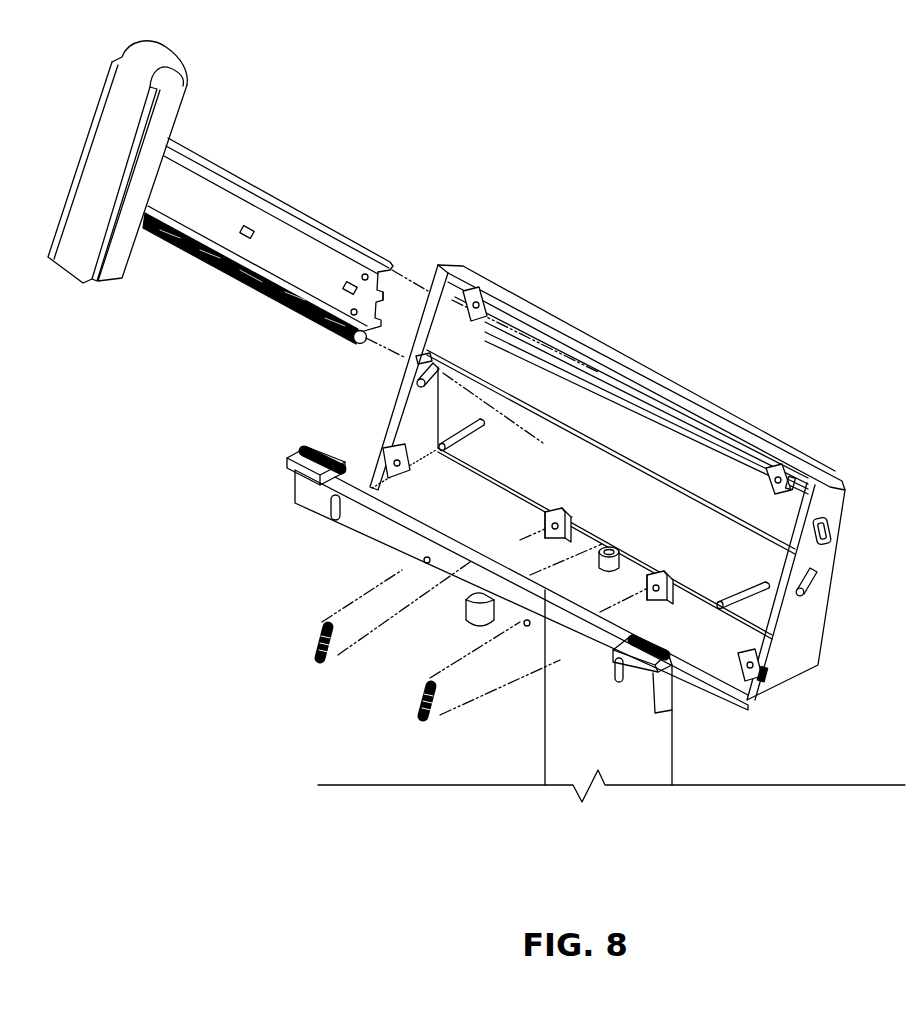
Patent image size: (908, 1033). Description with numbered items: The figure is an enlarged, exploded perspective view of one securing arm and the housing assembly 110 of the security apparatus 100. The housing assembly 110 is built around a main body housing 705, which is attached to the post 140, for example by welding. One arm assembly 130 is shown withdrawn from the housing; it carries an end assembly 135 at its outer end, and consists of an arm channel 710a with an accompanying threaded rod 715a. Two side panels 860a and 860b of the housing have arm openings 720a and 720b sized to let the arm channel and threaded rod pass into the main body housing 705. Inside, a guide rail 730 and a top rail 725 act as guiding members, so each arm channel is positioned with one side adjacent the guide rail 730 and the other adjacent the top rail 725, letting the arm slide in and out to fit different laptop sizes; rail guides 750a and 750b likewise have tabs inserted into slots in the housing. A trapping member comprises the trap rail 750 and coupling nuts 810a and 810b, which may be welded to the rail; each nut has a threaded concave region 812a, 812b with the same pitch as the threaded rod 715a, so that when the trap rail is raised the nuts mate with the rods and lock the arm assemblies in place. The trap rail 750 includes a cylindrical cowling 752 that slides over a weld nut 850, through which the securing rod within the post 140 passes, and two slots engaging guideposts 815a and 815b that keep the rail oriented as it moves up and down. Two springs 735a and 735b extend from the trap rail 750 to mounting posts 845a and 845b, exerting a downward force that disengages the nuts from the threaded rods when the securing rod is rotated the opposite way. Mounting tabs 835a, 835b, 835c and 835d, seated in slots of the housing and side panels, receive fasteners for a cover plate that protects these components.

The system 100 is at (737, 170).
The housing assembly 110 is at (565, 509).
The arm assembly 130 is at (278, 248).
The end assembly 135 is at (178, 42).
The post 140 is at (668, 733).
The main body housing 705 is at (543, 312).
The arm channel 710a is at (311, 210).
The threaded rod 715a is at (328, 333).
The arm opening 720a is at (418, 381).
The arm opening 720b is at (812, 566).
The top rail 725 is at (600, 402).
The guide rail 730 is at (577, 431).
The spring 735a is at (326, 665).
The spring 735b is at (424, 722).
The trap rail 750 is at (372, 552).
The rail guide 750a is at (367, 334).
The rail guide 750b is at (829, 527).
The cylindrical cowling 752 is at (465, 625).
The coupling nut 810a is at (292, 469).
The coupling nut 810b is at (637, 675).
The threaded concave region 812a is at (303, 450).
The threaded concave region 812b is at (668, 652).
The guidepost 815a is at (465, 442).
The guidepost 815b is at (745, 589).
The mounting tab 835a is at (407, 470).
The mounting tab 835b is at (483, 303).
The mounting tab 835c is at (787, 468).
The mounting tab 835d is at (753, 657).
The mounting post 845a is at (558, 510).
The mounting post 845b is at (657, 570).
The weld nut 850 is at (617, 546).
The side panel 860a is at (403, 437).
The side panel 860b is at (807, 627).